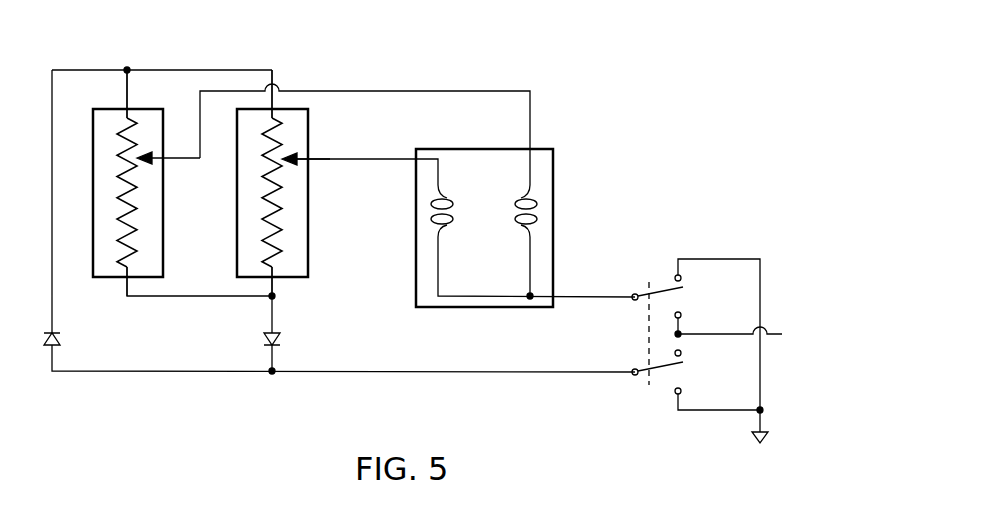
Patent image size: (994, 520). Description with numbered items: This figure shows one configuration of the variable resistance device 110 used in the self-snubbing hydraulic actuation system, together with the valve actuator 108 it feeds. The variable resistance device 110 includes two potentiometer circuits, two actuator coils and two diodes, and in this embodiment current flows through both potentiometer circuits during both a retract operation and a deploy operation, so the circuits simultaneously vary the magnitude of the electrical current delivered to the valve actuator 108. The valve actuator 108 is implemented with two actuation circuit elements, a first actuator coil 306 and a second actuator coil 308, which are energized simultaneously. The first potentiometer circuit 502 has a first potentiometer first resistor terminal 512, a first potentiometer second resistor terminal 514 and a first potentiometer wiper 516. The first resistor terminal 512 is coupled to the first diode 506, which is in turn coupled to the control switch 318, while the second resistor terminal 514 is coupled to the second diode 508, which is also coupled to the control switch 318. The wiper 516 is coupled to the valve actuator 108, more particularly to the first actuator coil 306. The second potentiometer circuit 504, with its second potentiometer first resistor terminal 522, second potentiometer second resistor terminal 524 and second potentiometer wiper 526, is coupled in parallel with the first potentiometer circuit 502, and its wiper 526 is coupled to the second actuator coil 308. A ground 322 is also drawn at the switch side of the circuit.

The variable resistance device 110 is at (636, 91).
The valve actuator 108 is at (484, 202).
The first actuator coil 306 is at (453, 201).
The second actuator coil 308 is at (515, 222).
The control switch 318 is at (648, 248).
The ground 322 is at (762, 445).
The first potentiometer circuit 502 is at (308, 220).
The second potentiometer circuit 504 is at (163, 220).
The first diode 506 is at (60, 338).
The second diode 508 is at (280, 338).
The first potentiometer first resistor terminal 512 is at (273, 104).
The first potentiometer second resistor terminal 514 is at (275, 282).
The first potentiometer wiper 516 is at (308, 159).
The second potentiometer first resistor terminal 522 is at (127, 108).
The second potentiometer second resistor terminal 524 is at (126, 282).
The second potentiometer wiper 526 is at (163, 160).